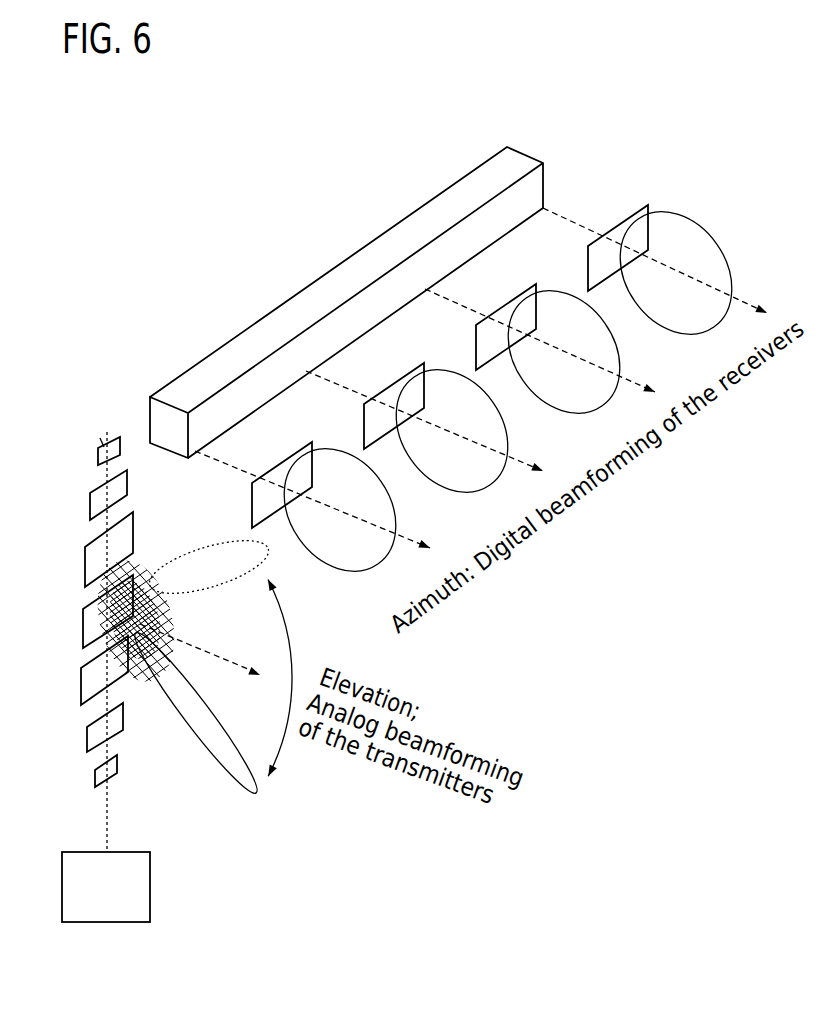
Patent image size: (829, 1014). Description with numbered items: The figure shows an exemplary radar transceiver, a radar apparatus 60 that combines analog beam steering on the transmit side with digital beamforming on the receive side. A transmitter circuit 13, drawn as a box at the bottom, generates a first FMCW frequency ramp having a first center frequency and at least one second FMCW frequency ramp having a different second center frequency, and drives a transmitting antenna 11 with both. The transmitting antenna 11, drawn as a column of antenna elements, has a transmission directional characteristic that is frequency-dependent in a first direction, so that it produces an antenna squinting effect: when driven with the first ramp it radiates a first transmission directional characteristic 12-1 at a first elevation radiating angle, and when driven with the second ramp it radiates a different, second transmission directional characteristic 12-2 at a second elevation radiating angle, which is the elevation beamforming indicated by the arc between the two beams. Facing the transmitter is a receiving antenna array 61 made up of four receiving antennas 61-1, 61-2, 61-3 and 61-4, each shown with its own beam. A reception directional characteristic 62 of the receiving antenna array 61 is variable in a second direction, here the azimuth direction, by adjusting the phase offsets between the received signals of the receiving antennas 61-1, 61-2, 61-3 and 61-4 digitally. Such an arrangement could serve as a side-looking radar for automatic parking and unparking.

The radar apparatus 60 is at (328, 142).
The receiving antenna array 61 is at (672, 188).
The receiving antenna 61-1 is at (282, 482).
The receiving antenna 61-2 is at (394, 403).
The receiving antenna 61-3 is at (506, 324).
The receiving antenna 61-4 is at (618, 245).
The reception directional characteristic 62 is at (708, 247).
The transmitting antenna 11 is at (100, 410).
The first transmission directional characteristic 12-1 is at (222, 575).
The second transmission directional characteristic 12-2 is at (229, 779).
The transmitter circuit 13 is at (105, 922).